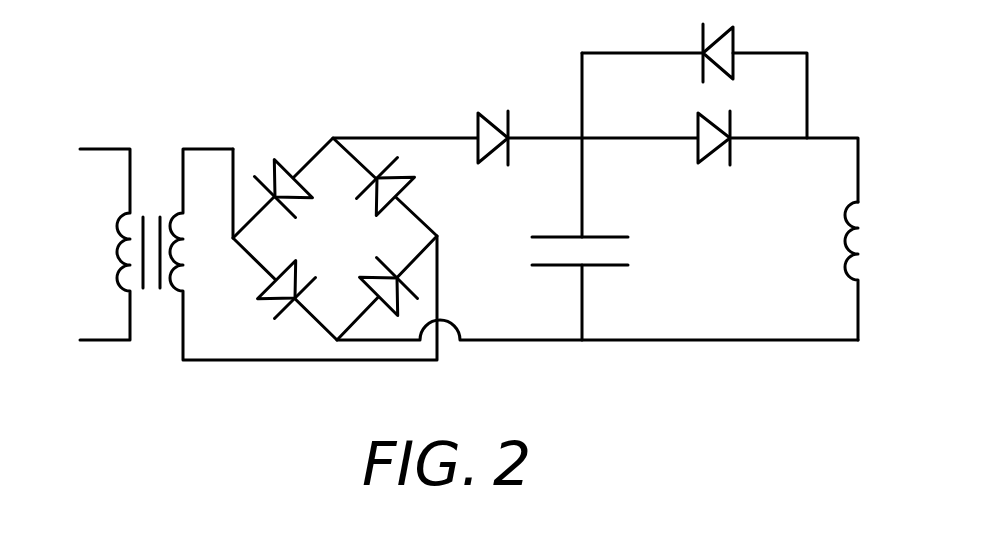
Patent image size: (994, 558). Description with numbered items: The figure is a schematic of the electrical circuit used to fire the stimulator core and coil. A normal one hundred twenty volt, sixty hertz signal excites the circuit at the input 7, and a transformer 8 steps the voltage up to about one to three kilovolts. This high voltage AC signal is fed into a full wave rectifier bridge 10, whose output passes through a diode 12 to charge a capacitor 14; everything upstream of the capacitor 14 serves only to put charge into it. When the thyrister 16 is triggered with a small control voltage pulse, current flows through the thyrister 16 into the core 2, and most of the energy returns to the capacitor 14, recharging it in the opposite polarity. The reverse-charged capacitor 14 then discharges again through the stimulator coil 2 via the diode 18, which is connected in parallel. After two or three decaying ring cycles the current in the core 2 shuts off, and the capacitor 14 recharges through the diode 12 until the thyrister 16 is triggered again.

The core 2 is at (840, 243).
The circuit excitation input 7 is at (82, 248).
The transformer 8 is at (152, 289).
The full wave rectifier bridge 10 is at (310, 318).
The diode 12 is at (506, 120).
The capacitor 14 is at (610, 267).
The thyrister 16 is at (721, 160).
The diode 18 is at (715, 33).